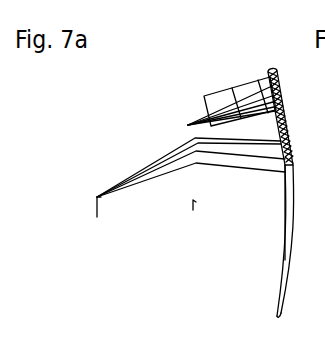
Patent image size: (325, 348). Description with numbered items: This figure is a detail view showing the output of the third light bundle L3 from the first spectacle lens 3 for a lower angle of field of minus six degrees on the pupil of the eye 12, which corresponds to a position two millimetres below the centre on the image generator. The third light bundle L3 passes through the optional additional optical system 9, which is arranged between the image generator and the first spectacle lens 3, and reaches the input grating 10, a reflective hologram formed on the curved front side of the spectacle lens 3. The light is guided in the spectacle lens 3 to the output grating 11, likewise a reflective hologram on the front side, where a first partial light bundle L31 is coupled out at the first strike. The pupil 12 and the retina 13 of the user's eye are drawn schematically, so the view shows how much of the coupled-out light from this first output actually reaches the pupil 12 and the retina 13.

The first spectacle lens 3 is at (268, 292).
The additional optical system 9 is at (203, 94).
The input grating 10 is at (283, 90).
The output grating 11 is at (295, 163).
The pupil 12 is at (194, 209).
The retina 13 is at (88, 192).
The third light bundle L3 is at (188, 125).
The first output partial light bundle L31 is at (257, 173).